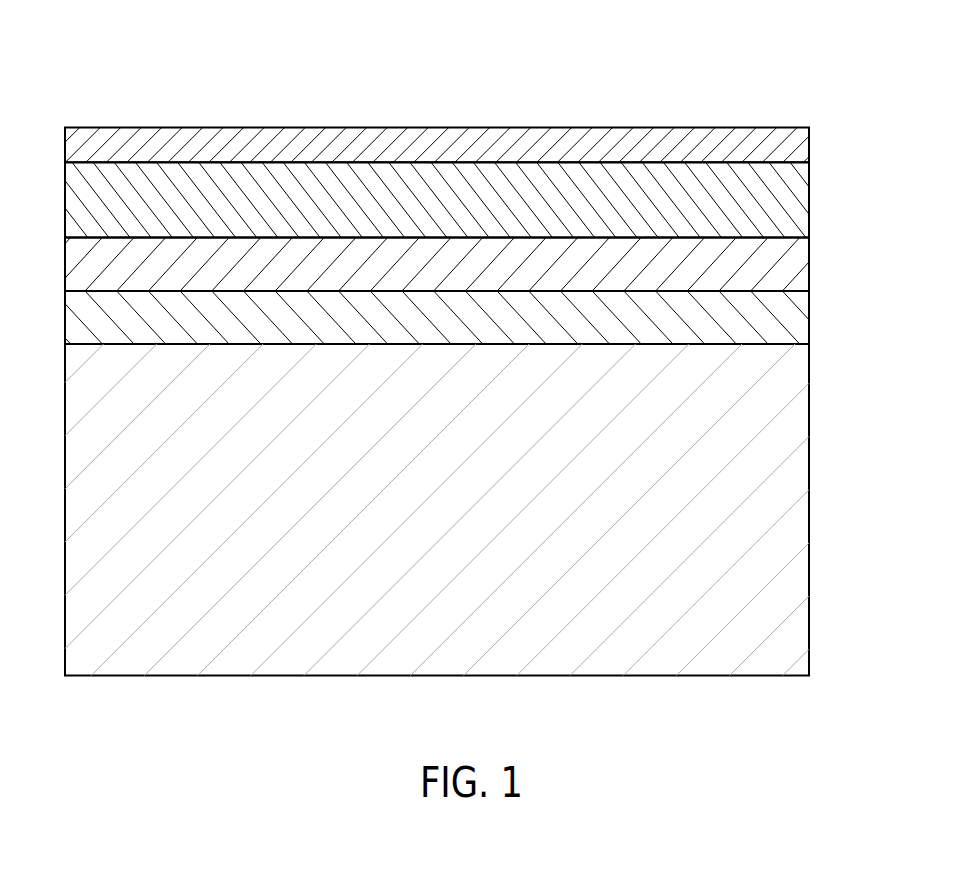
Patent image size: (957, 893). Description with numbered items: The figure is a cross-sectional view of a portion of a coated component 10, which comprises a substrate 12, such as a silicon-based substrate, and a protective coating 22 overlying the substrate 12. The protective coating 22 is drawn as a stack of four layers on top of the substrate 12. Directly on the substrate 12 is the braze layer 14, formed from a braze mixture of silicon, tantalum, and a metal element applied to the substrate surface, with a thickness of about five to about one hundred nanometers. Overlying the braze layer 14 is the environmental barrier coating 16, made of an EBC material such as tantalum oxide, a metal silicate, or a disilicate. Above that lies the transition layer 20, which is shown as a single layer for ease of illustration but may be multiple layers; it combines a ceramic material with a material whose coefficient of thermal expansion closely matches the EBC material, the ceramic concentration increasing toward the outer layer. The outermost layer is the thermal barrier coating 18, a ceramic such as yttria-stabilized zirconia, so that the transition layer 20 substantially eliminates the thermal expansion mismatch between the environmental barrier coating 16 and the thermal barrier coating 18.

The coated component 10 is at (503, 345).
The substrate 12 is at (809, 537).
The braze layer 14 is at (466, 317).
The environmental barrier coating 16 is at (809, 267).
The thermal barrier coating 18 is at (809, 149).
The transition layer 20 is at (809, 202).
The protective coating 22 is at (503, 228).